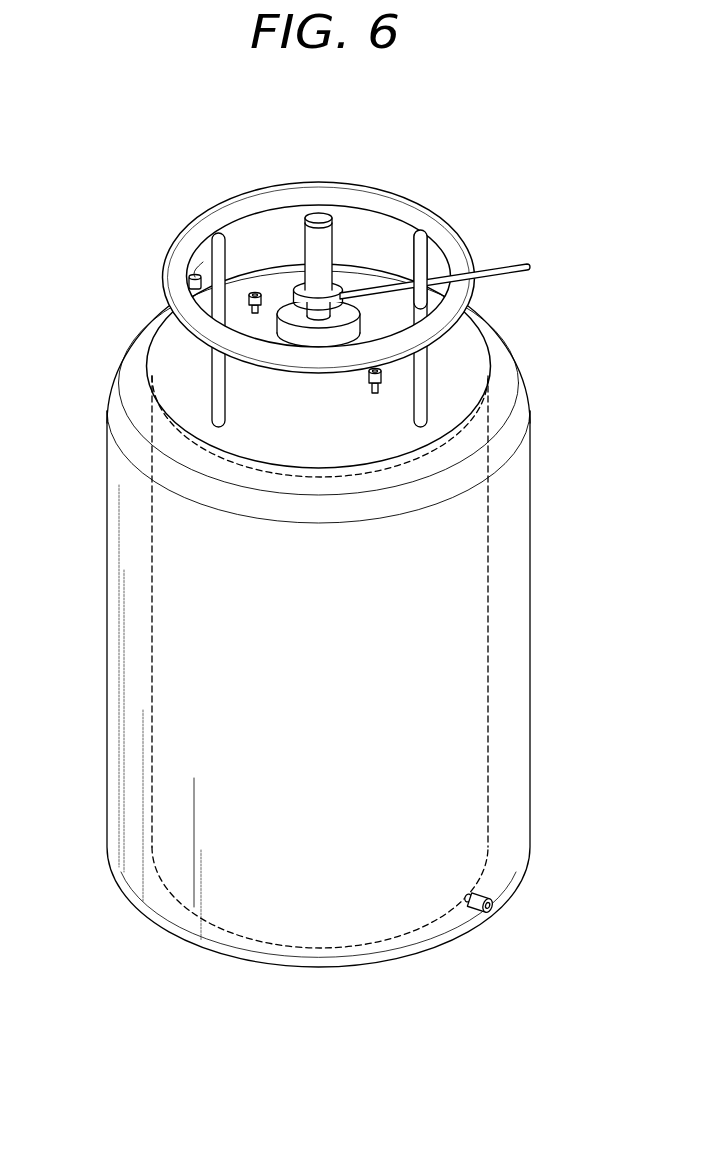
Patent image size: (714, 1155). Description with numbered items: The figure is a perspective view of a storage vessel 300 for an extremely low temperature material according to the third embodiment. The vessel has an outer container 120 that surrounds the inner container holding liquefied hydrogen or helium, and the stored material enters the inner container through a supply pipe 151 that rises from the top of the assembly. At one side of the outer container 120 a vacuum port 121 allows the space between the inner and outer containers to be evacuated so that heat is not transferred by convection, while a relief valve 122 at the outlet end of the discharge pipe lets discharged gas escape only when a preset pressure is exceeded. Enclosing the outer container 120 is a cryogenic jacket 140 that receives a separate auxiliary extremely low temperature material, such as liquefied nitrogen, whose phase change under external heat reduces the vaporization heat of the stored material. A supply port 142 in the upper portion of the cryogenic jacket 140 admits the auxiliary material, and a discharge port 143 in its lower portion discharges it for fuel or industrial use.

The storage vessel 300 is at (333, 104).
The outer container 120 is at (187, 387).
The vacuum port 121 is at (273, 297).
The relief valve 122 is at (383, 380).
The cryogenic jacket 140 is at (507, 561).
The supply port 142 is at (205, 266).
The discharge port 143 is at (489, 893).
The supply pipe 151 is at (328, 247).